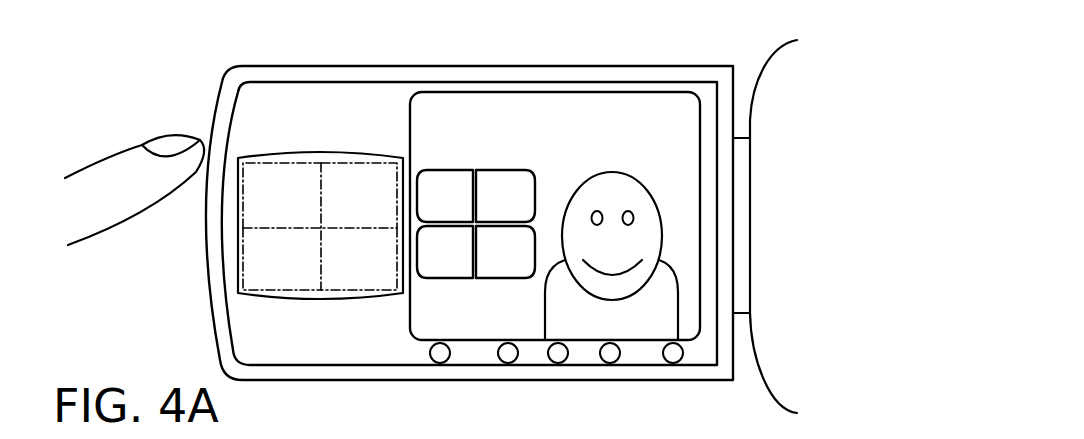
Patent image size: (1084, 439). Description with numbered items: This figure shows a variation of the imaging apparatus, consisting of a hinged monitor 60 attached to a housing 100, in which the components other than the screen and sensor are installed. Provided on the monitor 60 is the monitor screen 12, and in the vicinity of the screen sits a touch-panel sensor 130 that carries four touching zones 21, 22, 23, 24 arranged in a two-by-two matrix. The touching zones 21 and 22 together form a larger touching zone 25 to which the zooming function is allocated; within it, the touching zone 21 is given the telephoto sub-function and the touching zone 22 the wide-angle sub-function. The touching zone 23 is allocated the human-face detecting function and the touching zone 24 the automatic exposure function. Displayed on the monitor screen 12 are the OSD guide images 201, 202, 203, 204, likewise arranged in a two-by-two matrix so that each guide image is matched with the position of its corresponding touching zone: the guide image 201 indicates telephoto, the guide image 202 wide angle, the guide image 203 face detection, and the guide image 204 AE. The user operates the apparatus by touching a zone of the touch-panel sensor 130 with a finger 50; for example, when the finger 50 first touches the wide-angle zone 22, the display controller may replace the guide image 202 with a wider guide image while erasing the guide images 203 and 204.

The monitor screen 12 is at (612, 92).
The touching zone 21 is at (262, 200).
The touching zone 22 is at (255, 248).
The touching zone 23 is at (343, 207).
The touching zone 24 is at (343, 260).
The touching zone 25 is at (160, 210).
The finger 50 is at (106, 156).
The hinged monitor 60 is at (667, 65).
The housing 100 is at (757, 63).
The touch-panel sensor 130 is at (322, 153).
The OSD guide image 201 is at (443, 170).
The OSD guide image 202 is at (442, 278).
The OSD guide image 203 is at (508, 170).
The OSD guide image 204 is at (508, 278).